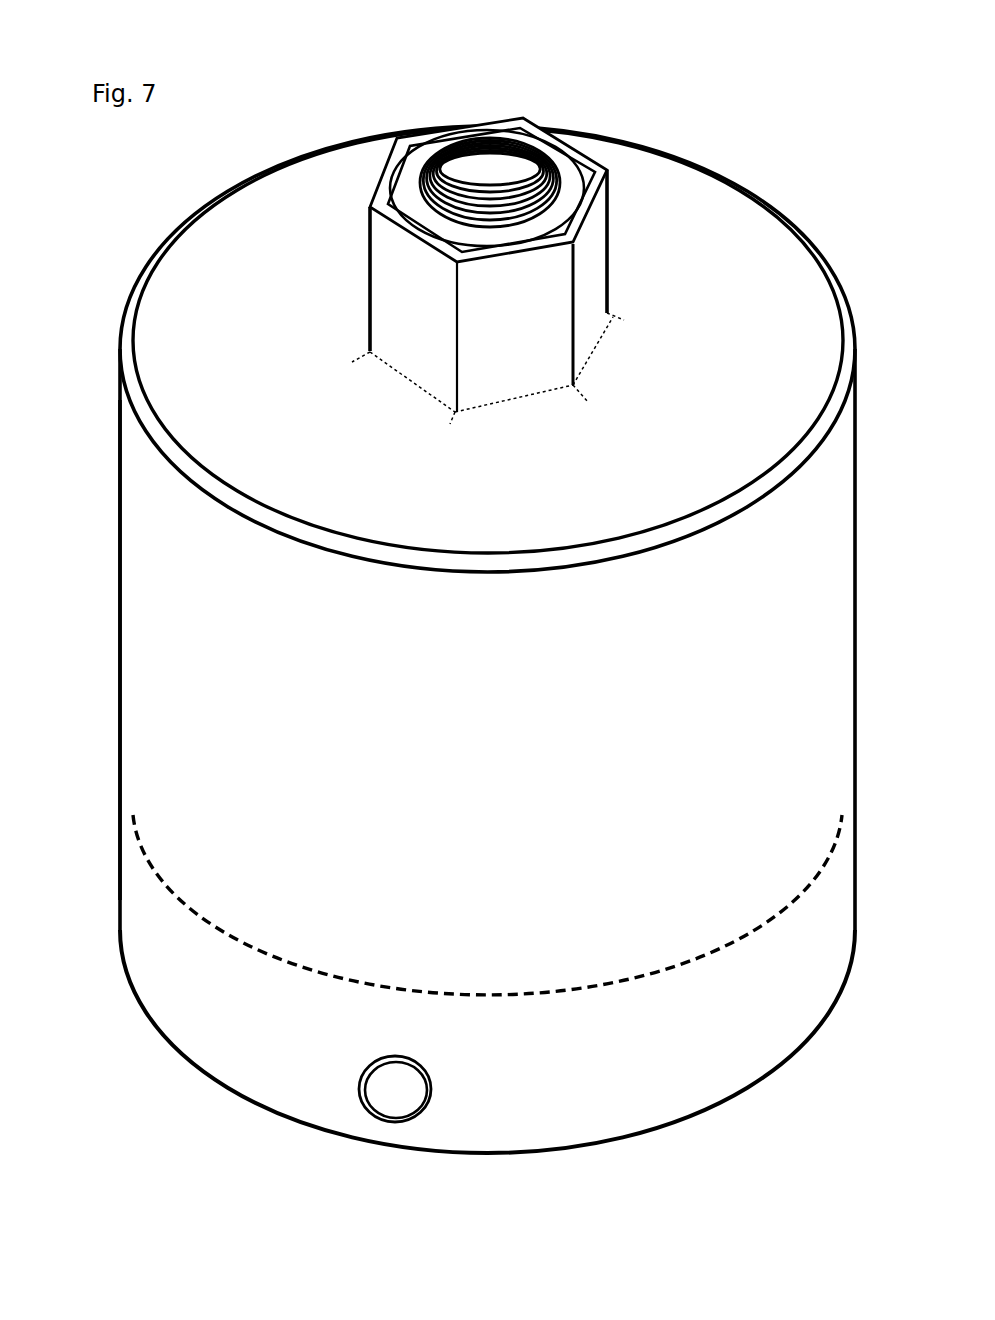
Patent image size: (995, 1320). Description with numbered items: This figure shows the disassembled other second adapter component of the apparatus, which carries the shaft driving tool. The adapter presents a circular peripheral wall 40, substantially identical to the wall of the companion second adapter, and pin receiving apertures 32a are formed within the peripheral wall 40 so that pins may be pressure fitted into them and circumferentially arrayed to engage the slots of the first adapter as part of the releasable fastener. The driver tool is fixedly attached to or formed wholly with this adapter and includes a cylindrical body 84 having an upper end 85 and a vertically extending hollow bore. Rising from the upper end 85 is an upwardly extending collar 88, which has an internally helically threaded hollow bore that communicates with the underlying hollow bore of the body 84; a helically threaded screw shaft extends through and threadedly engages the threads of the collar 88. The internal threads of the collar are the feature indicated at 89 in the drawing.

The circular peripheral wall 40 is at (732, 1010).
The cylindrical body 84 is at (172, 636).
The upper end 85 is at (237, 328).
The collar 88 is at (587, 280).
The threaded bore 89 is at (513, 187).
The pin receiving apertures 32a is at (395, 1086).